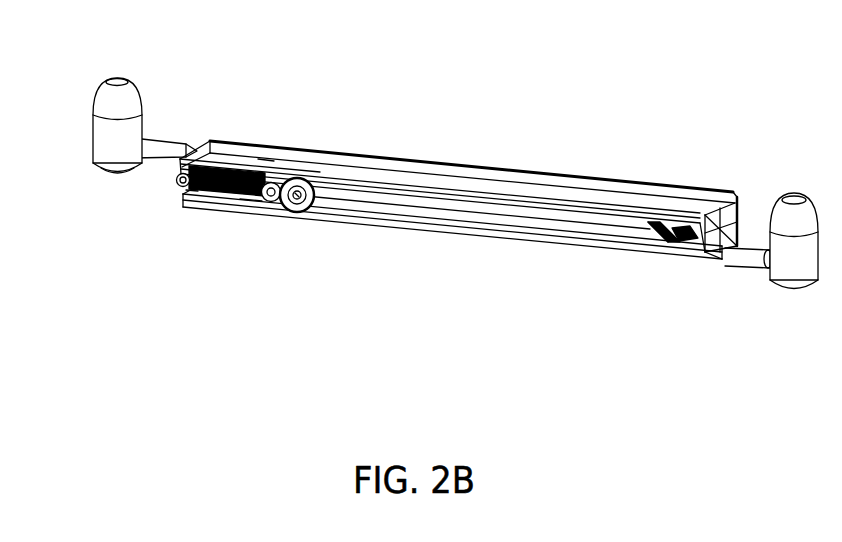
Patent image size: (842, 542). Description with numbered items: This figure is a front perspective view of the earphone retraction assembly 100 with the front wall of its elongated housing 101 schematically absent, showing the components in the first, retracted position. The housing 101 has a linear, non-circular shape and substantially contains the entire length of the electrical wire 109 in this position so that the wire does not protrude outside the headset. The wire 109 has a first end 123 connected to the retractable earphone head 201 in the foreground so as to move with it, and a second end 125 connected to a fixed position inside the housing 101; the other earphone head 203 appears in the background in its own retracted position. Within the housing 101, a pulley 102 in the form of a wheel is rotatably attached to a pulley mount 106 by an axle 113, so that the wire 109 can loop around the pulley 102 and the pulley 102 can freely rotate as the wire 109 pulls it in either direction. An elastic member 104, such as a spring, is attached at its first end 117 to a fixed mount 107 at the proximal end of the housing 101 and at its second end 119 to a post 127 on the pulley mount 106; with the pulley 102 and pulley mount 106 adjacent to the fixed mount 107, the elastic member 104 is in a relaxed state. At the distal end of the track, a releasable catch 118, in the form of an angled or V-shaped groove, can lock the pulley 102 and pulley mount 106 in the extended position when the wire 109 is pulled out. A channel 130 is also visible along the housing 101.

The earphone retraction assembly 100 is at (607, 118).
The elongated housing 101 is at (466, 172).
The pulley 102 is at (313, 186).
The elastic member 104 is at (203, 212).
The pulley mount 106 is at (266, 158).
The fixed mount 107 is at (178, 185).
The electrical wire 109 is at (522, 232).
The axle 113 is at (297, 178).
The first end of elastic member 117 is at (186, 196).
The releasable catch 118 is at (665, 228).
The second end of elastic member 119 is at (249, 201).
The first end of wire 123 is at (705, 262).
The second end of wire 125 is at (733, 194).
The post 127 is at (266, 205).
The channel 130 is at (487, 213).
The earphone head 201 is at (797, 273).
The earphone head 203 is at (111, 80).